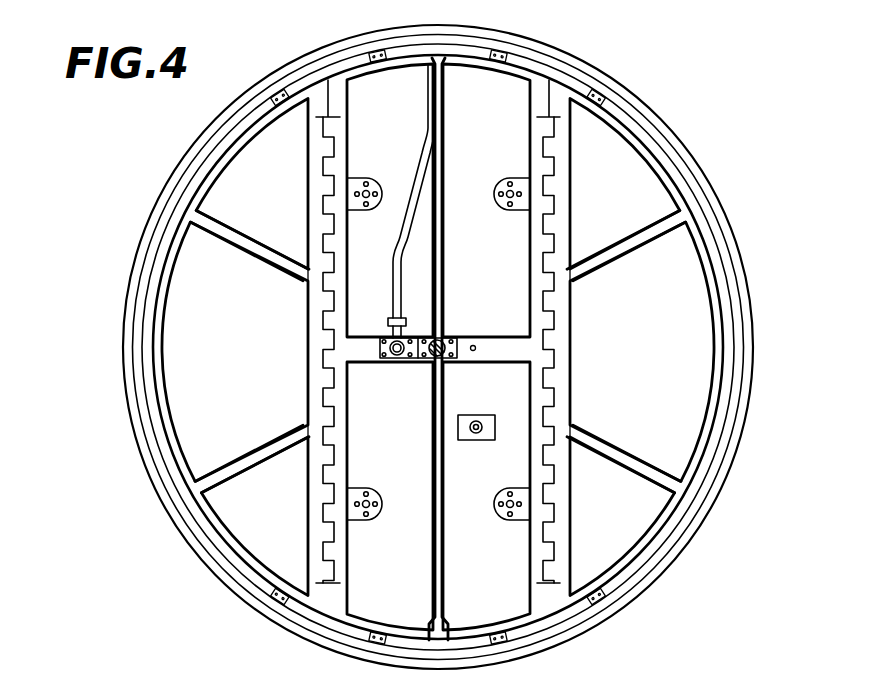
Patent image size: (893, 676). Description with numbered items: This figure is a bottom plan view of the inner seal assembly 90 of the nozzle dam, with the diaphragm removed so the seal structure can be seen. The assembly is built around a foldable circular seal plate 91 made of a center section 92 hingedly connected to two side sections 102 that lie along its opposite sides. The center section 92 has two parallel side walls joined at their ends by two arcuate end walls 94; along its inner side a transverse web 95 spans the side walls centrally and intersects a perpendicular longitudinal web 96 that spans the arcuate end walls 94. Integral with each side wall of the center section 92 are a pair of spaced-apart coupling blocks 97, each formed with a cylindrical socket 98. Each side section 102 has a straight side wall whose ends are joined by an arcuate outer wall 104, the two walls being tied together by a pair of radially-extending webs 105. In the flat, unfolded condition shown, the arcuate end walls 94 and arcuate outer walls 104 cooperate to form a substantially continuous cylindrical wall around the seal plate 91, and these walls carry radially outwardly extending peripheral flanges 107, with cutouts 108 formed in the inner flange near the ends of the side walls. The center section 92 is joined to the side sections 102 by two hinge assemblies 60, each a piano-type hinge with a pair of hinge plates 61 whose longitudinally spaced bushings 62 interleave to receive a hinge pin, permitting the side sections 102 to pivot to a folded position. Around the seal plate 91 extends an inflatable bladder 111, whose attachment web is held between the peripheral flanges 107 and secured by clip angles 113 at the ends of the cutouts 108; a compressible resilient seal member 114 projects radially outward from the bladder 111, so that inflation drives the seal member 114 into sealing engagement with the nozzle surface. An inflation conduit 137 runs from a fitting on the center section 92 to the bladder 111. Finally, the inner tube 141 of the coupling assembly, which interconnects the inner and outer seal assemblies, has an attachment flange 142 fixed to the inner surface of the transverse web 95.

The inner seal assembly 90 is at (722, 74).
The peripheral flanges 107 is at (738, 350).
The inflatable bladder 111 is at (140, 278).
The seal member 114 is at (150, 223).
The cutouts 108 is at (295, 90).
The clip angles 113 is at (592, 96).
The side sections 102 is at (640, 188).
The arcuate outer wall 104 is at (712, 390).
The foldable circular seal plate 91 is at (683, 301).
The radially-extending webs 105 is at (277, 440).
The hinge plates 61 is at (528, 244).
The center section 92 is at (503, 95).
The longitudinal web 96 is at (435, 418).
The transverse web 95 is at (492, 346).
The arcuate end walls 94 is at (460, 63).
The hinge assemblies 60 is at (478, 331).
The bushings 62 is at (548, 165).
The coupling blocks 97 is at (350, 178).
The cylindrical socket 98 is at (500, 496).
The inflation conduit 137 is at (398, 242).
The attachment flange 142 is at (437, 346).
The inner tube 141 is at (444, 360).